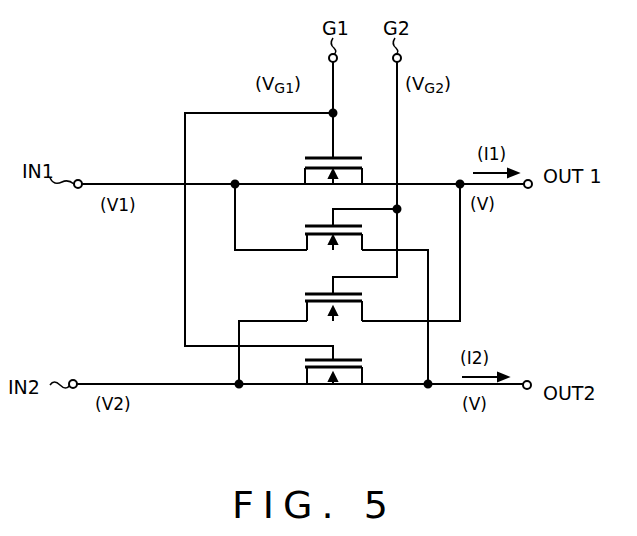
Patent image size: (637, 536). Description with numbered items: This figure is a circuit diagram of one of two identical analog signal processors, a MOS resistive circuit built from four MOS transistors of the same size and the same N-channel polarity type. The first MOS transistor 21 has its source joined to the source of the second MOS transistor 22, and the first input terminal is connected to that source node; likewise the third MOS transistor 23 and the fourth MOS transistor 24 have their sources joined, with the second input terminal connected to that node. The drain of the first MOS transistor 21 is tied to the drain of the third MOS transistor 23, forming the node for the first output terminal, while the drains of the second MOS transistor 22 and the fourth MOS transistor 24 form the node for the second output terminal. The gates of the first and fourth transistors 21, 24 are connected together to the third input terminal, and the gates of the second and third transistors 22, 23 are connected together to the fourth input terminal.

The first MOS transistor 21 is at (346, 152).
The second MOS transistor 22 is at (303, 238).
The third MOS transistor 23 is at (305, 314).
The fourth MOS transistor 24 is at (331, 400).